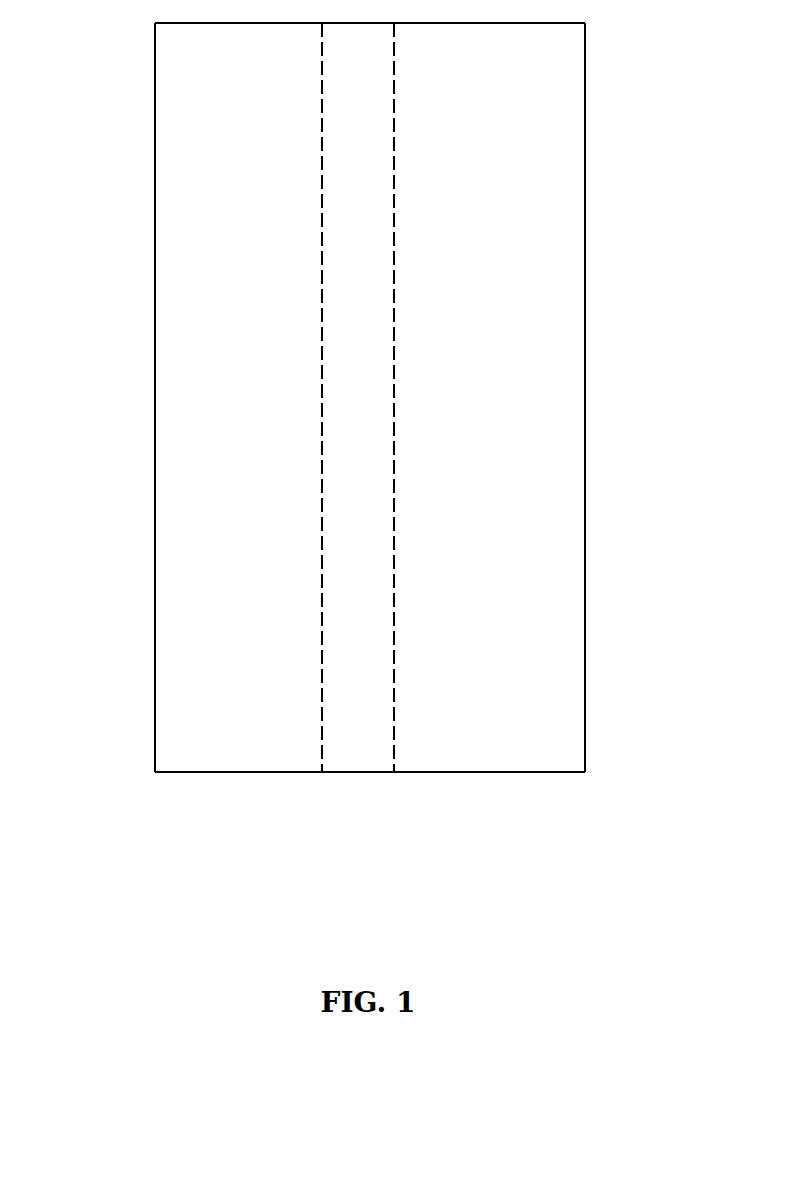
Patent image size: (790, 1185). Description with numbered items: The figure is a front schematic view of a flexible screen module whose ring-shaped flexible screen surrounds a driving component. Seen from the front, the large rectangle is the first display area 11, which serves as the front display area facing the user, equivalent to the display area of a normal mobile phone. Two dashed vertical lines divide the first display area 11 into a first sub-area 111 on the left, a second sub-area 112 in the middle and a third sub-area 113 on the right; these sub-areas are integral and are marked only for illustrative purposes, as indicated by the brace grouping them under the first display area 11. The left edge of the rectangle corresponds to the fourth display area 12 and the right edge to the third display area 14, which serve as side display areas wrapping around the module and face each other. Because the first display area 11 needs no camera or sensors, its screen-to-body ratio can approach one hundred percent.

The first display area 11 is at (371, 477).
The first sub-area 111 is at (178, 435).
The second sub-area 112 is at (357, 747).
The third sub-area 113 is at (550, 434).
The fourth display area 12 is at (155, 410).
The third display area 14 is at (585, 405).